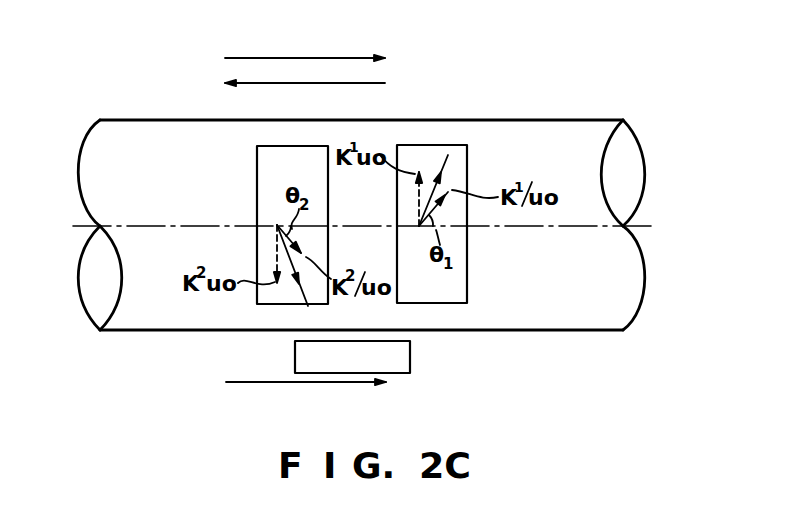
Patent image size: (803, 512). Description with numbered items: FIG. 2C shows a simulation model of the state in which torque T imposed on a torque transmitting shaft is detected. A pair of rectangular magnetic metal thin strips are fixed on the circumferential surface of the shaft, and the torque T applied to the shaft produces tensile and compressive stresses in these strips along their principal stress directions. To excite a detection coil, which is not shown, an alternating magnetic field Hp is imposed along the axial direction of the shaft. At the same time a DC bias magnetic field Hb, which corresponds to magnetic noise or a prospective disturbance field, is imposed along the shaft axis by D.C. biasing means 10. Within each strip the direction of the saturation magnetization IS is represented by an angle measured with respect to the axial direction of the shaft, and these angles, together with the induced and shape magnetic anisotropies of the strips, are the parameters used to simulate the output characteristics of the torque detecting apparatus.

The D.C. biasing means 10 is at (282, 354).
The saturation magnetization IS is at (308, 304).
The torque T is at (51, 108).
The alternate magnetic field Hp is at (305, 57).
The DC bias magnetic field Hb is at (306, 397).